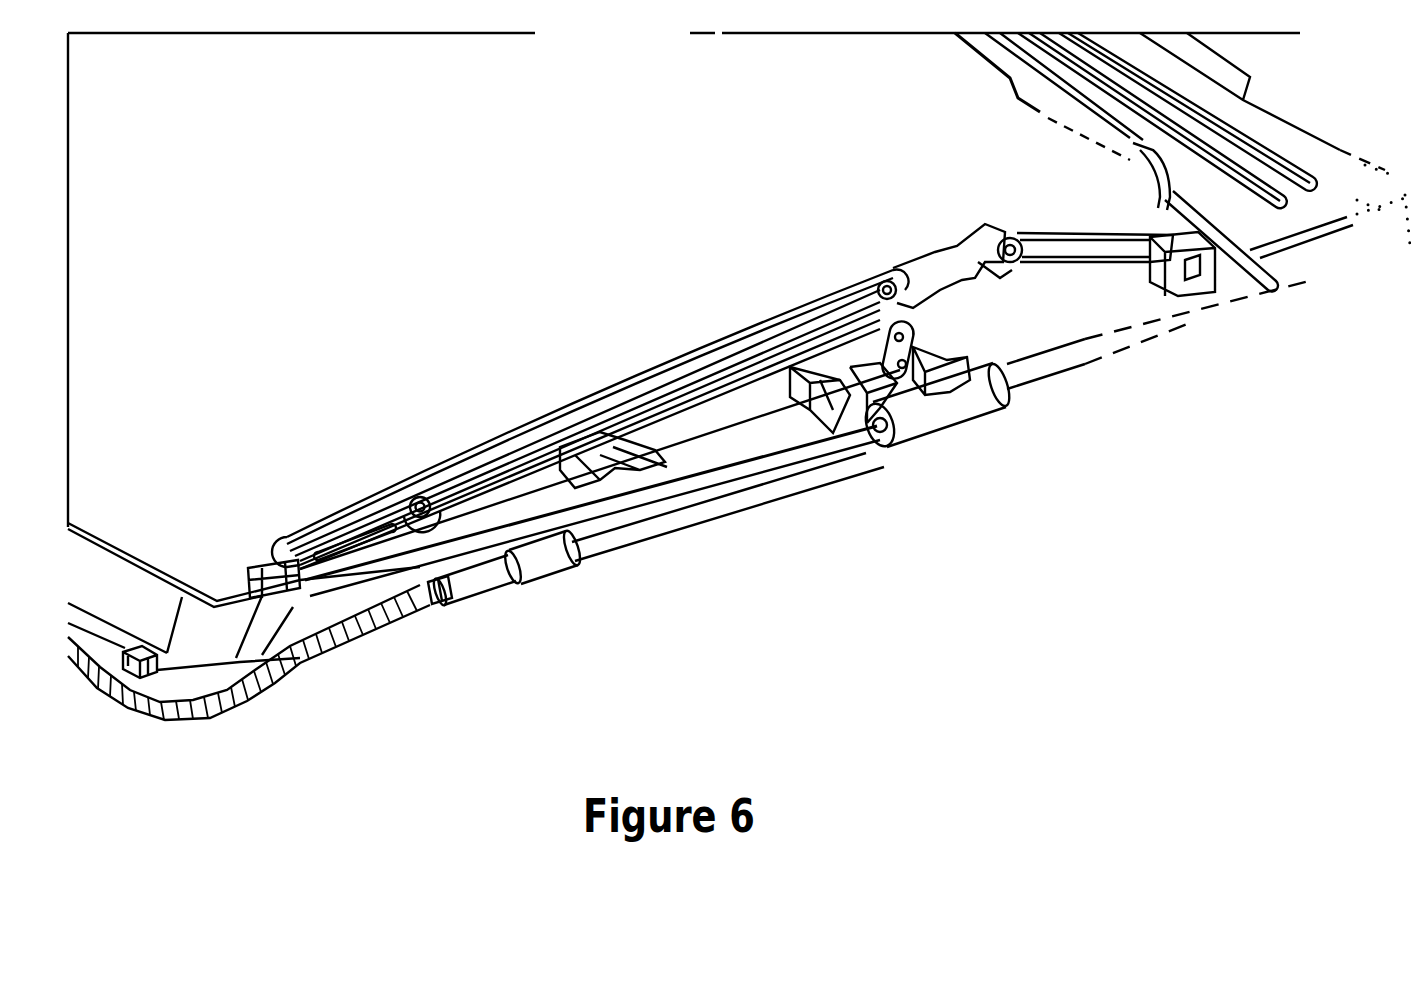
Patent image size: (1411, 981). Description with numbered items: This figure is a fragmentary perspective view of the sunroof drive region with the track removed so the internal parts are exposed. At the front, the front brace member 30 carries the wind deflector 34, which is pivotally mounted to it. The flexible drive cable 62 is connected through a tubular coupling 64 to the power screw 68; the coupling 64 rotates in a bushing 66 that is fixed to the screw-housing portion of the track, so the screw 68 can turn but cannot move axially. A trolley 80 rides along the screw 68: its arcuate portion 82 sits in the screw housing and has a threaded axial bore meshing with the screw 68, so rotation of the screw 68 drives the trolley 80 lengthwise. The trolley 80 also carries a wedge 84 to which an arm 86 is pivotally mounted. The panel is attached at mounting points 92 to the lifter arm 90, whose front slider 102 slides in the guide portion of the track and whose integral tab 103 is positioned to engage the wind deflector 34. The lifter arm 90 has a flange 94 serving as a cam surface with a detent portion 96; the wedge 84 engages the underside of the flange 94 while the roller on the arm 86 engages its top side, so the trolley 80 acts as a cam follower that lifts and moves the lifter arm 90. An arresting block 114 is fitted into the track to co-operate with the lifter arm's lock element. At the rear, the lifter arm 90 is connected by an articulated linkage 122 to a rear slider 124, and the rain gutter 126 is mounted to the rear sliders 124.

The front brace member 30 is at (757, 407).
The wind deflector 34 is at (117, 577).
The flexible drive cable 62 is at (433, 597).
The tubular coupling 64 is at (476, 587).
The bushing 66 is at (550, 573).
The power screw 68 is at (687, 508).
The trolley 80 is at (957, 357).
The arcuate portion 82 is at (943, 417).
The wedge 84 is at (865, 385).
The arm 86 is at (905, 343).
The lifter arm 90 is at (687, 367).
The mounting point 92 is at (893, 282).
The flange 94 is at (701, 444).
The detent portion 96 is at (967, 267).
The front slider 102 is at (250, 567).
The integral tab 103 is at (363, 557).
The arresting block 114 is at (553, 427).
The articulated linkage 122 is at (1050, 230).
The rear slider 124 is at (1190, 260).
The rain gutter 126 is at (1270, 127).